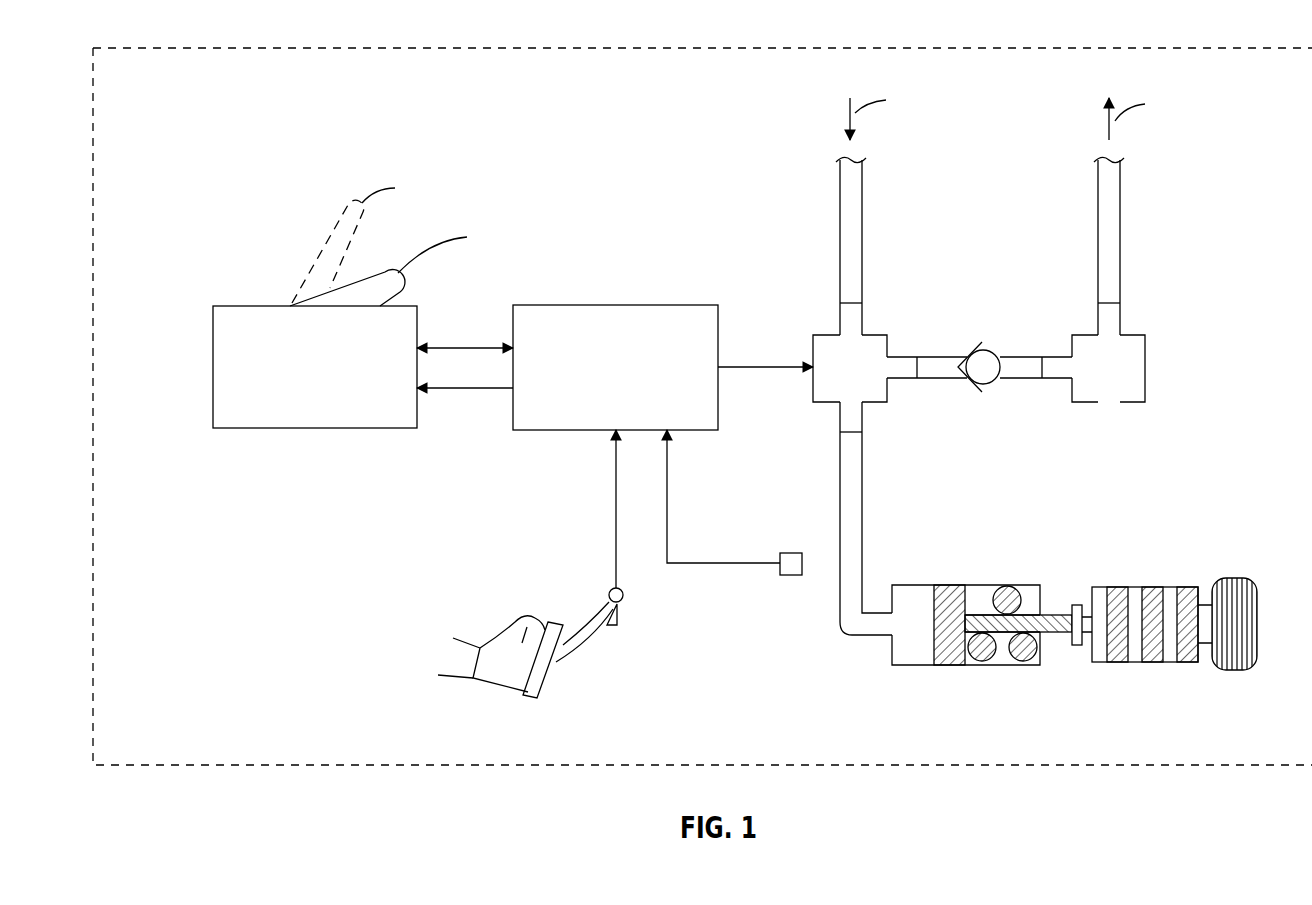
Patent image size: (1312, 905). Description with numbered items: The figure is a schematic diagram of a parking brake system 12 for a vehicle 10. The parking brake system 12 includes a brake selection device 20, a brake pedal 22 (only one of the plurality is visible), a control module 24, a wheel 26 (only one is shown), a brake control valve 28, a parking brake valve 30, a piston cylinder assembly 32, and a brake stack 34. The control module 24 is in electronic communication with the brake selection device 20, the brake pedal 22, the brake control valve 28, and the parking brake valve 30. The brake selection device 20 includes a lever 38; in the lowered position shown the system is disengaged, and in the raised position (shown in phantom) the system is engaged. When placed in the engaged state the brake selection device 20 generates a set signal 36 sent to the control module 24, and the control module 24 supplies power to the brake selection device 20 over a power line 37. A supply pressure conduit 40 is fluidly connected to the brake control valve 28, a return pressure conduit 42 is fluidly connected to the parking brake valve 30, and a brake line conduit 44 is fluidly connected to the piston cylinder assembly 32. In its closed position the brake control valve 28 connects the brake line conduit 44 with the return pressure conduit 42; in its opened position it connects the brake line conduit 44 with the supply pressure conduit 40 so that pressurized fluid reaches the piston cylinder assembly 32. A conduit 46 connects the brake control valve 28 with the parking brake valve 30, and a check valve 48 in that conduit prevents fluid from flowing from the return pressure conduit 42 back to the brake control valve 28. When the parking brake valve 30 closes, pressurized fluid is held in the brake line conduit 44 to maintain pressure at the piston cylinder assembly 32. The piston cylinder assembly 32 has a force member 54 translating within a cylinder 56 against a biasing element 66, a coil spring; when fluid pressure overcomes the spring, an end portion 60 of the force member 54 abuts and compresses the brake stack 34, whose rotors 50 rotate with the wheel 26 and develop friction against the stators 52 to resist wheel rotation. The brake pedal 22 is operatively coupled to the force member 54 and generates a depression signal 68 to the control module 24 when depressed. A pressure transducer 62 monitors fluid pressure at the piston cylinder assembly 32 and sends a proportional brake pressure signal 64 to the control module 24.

The vehicle 10 is at (156, 46).
The parking brake system 12 is at (203, 116).
The brake selection device 20 is at (262, 430).
The brake pedal 22 is at (557, 630).
The control module 24 is at (615, 305).
The wheel 26 is at (1230, 578).
The brake control valve 28 is at (865, 321).
The parking brake valve 30 is at (1125, 331).
The piston cylinder assembly 32 is at (975, 619).
The brake stack 34 is at (1164, 617).
The set signal 36 is at (470, 347).
The power line 37 is at (470, 390).
The lever 38 is at (380, 276).
The supply pressure conduit 40 is at (840, 190).
The return pressure conduit 42 is at (1100, 249).
The brake line conduit 44 is at (856, 474).
The conduit 46 is at (1023, 366).
The check valve 48 is at (992, 385).
The rotors 50 is at (1186, 588).
The stators 52 is at (1153, 706).
The force member 54 is at (1033, 668).
The cylinder 56 is at (905, 668).
The end portion 60 is at (1045, 615).
The pressure transducer 62 is at (790, 580).
The brake pressure signal 64 is at (668, 478).
The biasing element 66 is at (1000, 586).
The depression signal 68 is at (612, 508).